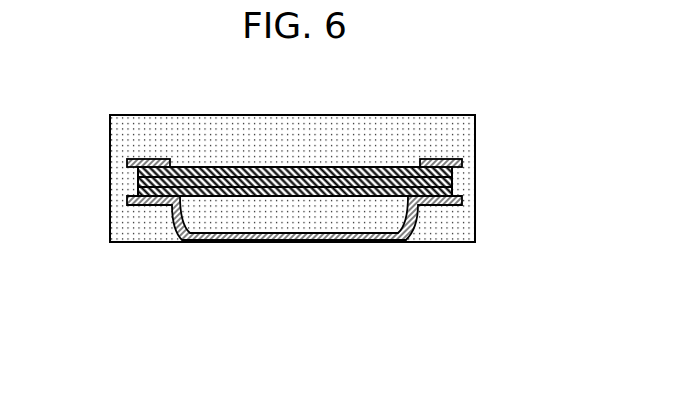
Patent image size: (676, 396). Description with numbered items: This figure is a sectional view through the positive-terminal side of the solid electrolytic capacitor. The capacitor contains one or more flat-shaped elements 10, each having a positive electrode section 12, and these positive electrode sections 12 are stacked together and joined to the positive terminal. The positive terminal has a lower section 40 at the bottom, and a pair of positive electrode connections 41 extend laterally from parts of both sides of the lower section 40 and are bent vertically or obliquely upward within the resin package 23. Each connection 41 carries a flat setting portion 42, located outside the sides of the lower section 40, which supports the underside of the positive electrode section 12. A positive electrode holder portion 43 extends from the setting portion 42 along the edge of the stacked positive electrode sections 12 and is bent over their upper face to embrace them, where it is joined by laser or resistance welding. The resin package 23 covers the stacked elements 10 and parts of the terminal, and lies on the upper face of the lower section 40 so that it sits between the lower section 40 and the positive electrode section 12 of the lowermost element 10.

The element 10 is at (458, 161).
The positive electrode section 12 is at (350, 167).
The resin package 23 is at (120, 140).
The lower section 40 is at (300, 238).
The positive electrode connection 41 is at (418, 207).
The setting portion 42 is at (152, 201).
The positive electrode holder portion 43 is at (128, 167).